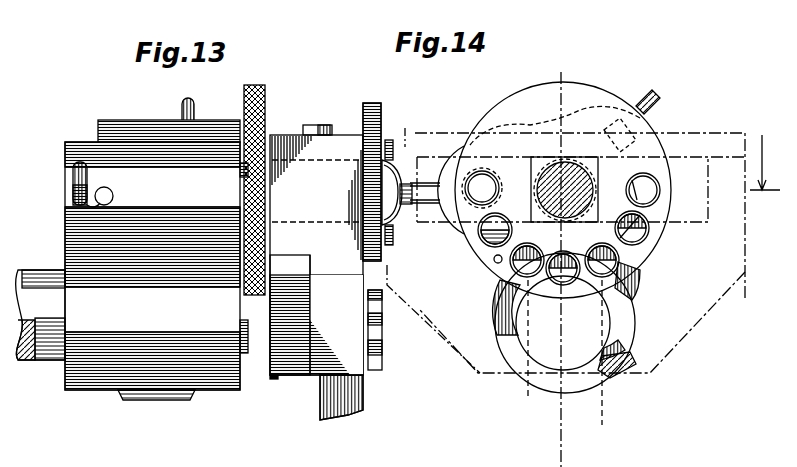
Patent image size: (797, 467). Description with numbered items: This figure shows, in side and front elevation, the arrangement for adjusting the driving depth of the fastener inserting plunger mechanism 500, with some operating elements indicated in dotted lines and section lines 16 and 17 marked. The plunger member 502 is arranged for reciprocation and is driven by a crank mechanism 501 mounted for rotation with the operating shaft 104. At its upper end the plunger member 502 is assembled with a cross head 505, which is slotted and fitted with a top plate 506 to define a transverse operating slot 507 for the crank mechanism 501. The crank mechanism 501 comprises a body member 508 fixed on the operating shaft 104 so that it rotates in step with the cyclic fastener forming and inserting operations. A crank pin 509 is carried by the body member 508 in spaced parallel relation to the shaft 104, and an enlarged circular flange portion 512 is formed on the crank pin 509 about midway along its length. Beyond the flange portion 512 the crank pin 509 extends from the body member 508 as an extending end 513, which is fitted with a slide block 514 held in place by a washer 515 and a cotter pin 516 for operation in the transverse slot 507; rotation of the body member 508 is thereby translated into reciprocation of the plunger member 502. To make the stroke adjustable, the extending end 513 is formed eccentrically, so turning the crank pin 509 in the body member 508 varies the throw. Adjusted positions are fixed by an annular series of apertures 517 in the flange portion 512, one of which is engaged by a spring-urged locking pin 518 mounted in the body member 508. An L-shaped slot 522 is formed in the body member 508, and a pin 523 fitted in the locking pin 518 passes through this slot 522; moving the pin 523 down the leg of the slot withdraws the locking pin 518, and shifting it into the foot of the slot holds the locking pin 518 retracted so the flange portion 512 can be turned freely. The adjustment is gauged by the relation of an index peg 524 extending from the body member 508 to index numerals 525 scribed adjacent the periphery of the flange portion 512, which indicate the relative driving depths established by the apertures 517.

In FIG. 13, the section line 16 is at (408, 129).
In FIG. 14, the section line 16 is at (765, 153).
In FIG. 14, the section line 17 is at (550, 66).
In FIG. 13, the operating shaft 104 is at (45, 358).
In FIG. 14, the operating shaft 104 is at (506, 315).
In FIG. 13, the fastener inserting plunger mechanism 500 is at (280, 380).
In FIG. 13, the crank mechanism 501 is at (68, 245).
In FIG. 14, the crank mechanism 501 is at (496, 325).
In FIG. 13, the plunger member 502 is at (363, 395).
In FIG. 14, the plunger member 502 is at (604, 410).
In FIG. 13, the cross head 505 is at (365, 330).
In FIG. 14, the cross head 505 is at (710, 318).
In FIG. 13, the top plate 506 is at (345, 135).
In FIG. 14, the top plate 506 is at (705, 132).
In FIG. 14, the transverse operating slot 507 is at (700, 222).
In FIG. 13, the body member 508 is at (118, 392).
In FIG. 14, the body member 508 is at (645, 282).
In FIG. 14, the crank pin 509 is at (582, 250).
In FIG. 13, the flange portion 512 is at (265, 100).
In FIG. 14, the flange portion 512 is at (574, 88).
In FIG. 13, the extending end 513 is at (402, 215).
In FIG. 14, the extending end 513 is at (630, 188).
In FIG. 14, the slide block 514 is at (590, 160).
In FIG. 13, the washer 515 is at (370, 103).
In FIG. 13, the cotter pin 516 is at (388, 140).
In FIG. 14, the apertures 517 is at (505, 276).
In FIG. 13, the locking pin 518 is at (73, 192).
In FIG. 14, the locking pin 518 is at (478, 222).
In FIG. 13, the L-shaped slot 522 is at (73, 168).
In FIG. 13, the pin 523 is at (100, 205).
In FIG. 13, the index peg 524 is at (182, 103).
In FIG. 14, the index peg 524 is at (654, 100).
In FIG. 14, the index numerals 525 is at (497, 112).